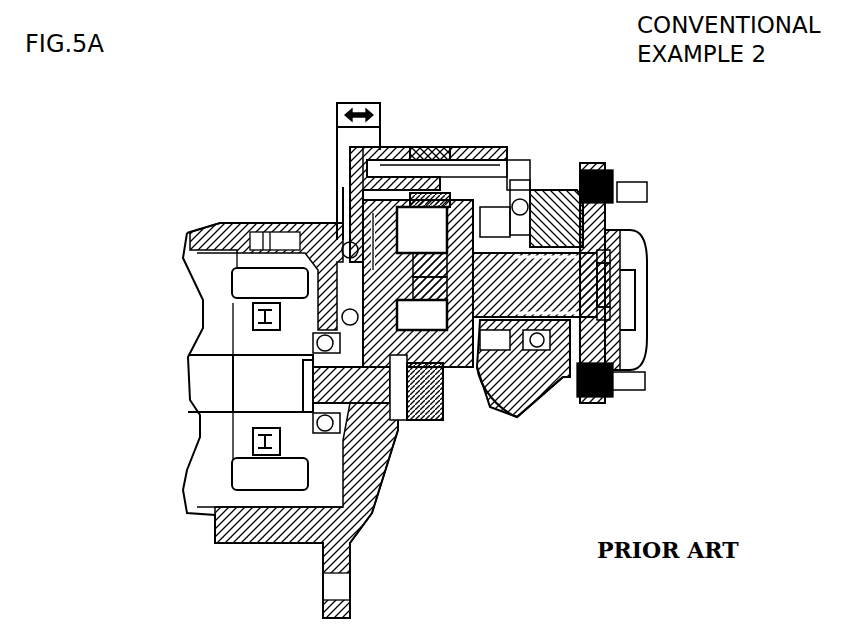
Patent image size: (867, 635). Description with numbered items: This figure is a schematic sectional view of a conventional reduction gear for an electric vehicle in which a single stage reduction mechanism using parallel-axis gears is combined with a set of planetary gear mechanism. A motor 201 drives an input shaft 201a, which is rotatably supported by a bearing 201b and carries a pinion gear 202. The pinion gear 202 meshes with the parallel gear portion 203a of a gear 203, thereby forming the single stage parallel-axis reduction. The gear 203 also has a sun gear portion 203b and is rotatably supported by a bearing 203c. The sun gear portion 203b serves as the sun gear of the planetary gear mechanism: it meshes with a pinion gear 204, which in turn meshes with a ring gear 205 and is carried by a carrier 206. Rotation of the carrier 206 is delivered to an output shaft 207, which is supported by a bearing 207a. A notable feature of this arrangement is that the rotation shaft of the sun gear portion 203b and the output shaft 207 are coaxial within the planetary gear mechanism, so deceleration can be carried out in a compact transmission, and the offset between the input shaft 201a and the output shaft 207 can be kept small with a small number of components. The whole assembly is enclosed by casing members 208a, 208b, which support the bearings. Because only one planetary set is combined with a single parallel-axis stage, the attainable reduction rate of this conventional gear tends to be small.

The motor 201 is at (190, 328).
The input shaft 201a is at (300, 383).
The bearing 201b is at (300, 428).
The pinion gear 202 is at (355, 403).
The gear 203 is at (330, 262).
The parallel gear portion 203a is at (343, 205).
The sun gear portion 203b is at (513, 380).
The bearing 203c is at (345, 262).
The pinion gear 204 is at (450, 420).
The ring gear 205 is at (422, 147).
The carrier 206 is at (457, 207).
The output shaft 207 is at (607, 213).
The bearing 207a is at (547, 360).
The casing member 208a is at (270, 545).
The casing member 208b is at (537, 203).